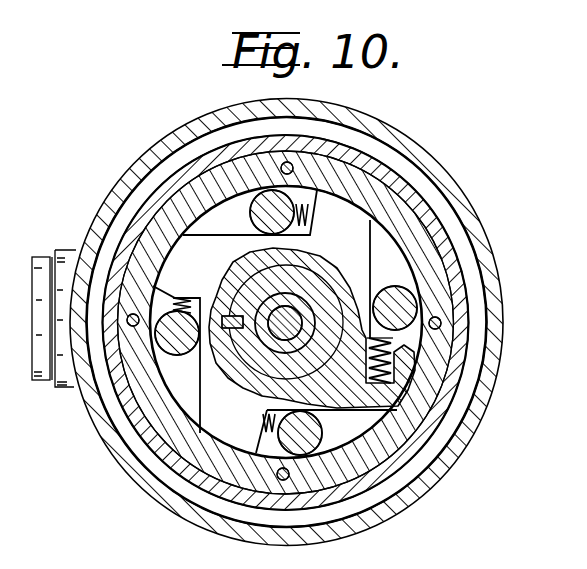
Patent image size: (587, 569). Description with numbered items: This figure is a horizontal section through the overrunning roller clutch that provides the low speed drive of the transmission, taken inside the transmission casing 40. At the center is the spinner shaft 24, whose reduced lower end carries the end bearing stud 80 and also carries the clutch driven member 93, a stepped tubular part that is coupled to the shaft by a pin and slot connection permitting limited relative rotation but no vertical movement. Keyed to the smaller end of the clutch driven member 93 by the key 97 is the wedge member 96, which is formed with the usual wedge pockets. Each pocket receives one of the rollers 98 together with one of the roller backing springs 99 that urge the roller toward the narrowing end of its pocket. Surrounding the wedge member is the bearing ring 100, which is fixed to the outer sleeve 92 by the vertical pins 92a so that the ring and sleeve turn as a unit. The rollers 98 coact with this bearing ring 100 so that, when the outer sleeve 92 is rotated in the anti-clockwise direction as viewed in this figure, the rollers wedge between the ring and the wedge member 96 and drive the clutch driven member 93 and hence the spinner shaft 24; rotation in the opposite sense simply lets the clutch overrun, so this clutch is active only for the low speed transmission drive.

The transmission casing 40 is at (427, 484).
The outer sleeve 92 is at (133, 410).
The vertical pins 92a is at (140, 337).
The bearing ring 100 is at (390, 443).
The wedge member 96 is at (275, 321).
The clutch driven member 93 is at (317, 283).
The spinner shaft 24 is at (293, 348).
The key 97 is at (238, 345).
The end bearing stud 80 is at (283, 313).
The rollers 98 is at (270, 229).
The roller backing springs 99 is at (308, 214).